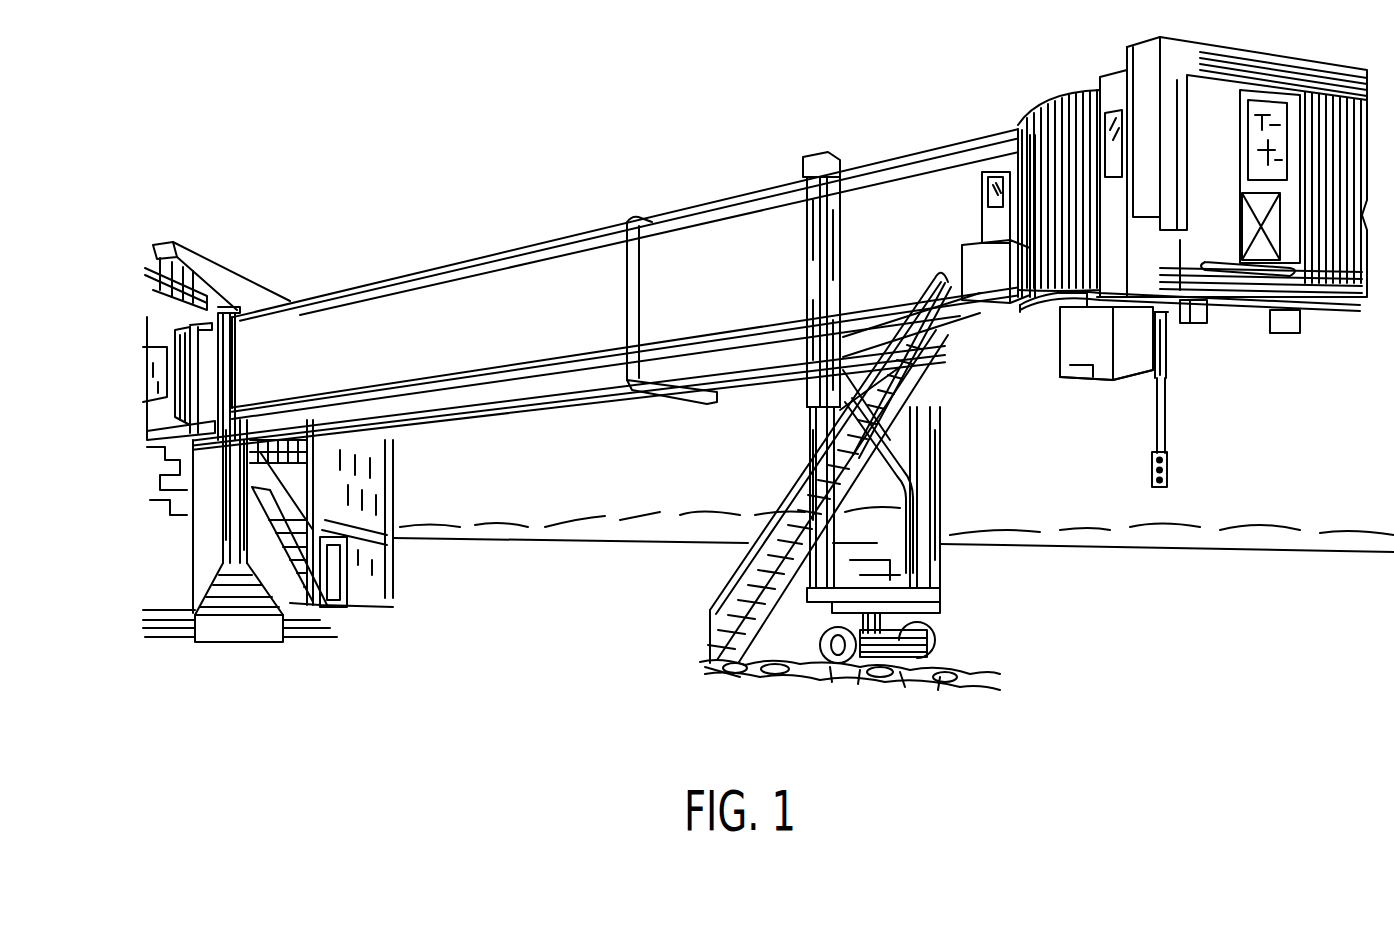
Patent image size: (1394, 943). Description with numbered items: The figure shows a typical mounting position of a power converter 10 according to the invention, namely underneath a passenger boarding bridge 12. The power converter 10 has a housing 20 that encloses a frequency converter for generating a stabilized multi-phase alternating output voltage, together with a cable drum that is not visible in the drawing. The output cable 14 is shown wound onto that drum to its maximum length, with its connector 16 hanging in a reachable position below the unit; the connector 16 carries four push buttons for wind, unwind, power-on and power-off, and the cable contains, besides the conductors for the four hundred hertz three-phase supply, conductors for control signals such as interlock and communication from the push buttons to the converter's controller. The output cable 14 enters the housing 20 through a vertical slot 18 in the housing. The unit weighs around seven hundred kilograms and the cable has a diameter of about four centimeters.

The power converter 10 is at (1083, 368).
The passenger boarding bridge 12 is at (725, 232).
The output cable 14 is at (1165, 430).
The connector 16 is at (1170, 480).
The vertical slot 18 is at (1170, 345).
The housing 20 is at (1083, 338).